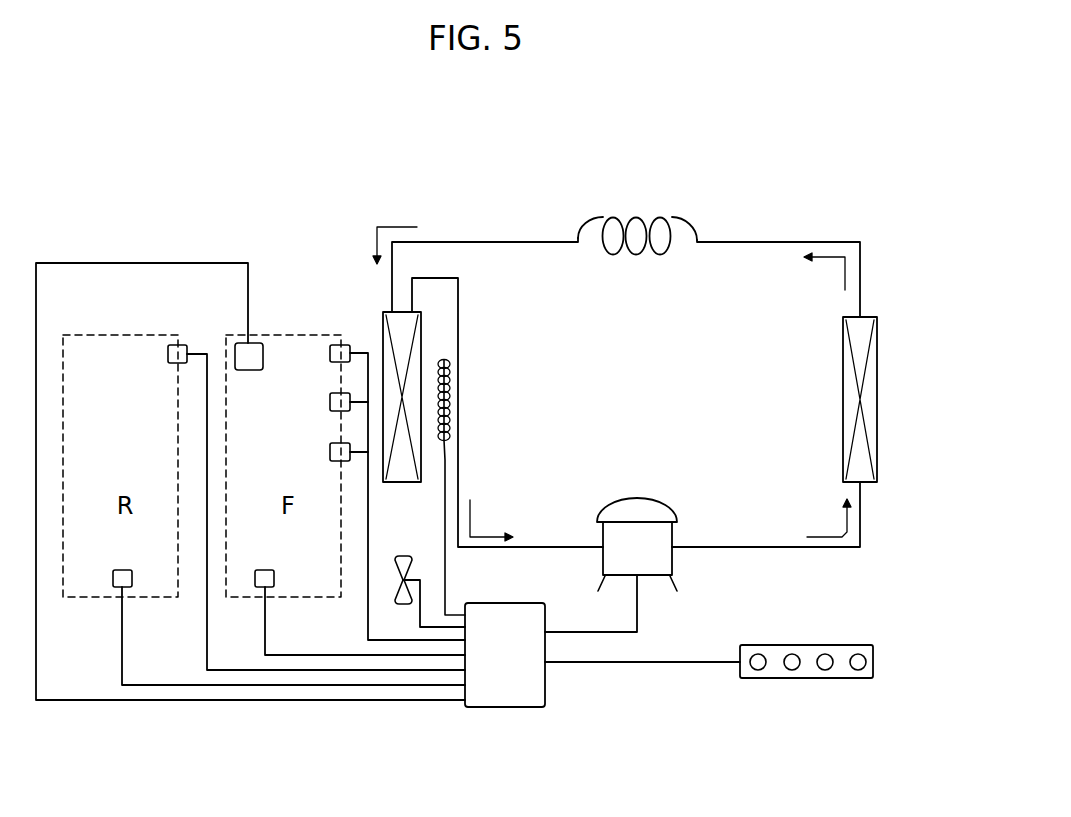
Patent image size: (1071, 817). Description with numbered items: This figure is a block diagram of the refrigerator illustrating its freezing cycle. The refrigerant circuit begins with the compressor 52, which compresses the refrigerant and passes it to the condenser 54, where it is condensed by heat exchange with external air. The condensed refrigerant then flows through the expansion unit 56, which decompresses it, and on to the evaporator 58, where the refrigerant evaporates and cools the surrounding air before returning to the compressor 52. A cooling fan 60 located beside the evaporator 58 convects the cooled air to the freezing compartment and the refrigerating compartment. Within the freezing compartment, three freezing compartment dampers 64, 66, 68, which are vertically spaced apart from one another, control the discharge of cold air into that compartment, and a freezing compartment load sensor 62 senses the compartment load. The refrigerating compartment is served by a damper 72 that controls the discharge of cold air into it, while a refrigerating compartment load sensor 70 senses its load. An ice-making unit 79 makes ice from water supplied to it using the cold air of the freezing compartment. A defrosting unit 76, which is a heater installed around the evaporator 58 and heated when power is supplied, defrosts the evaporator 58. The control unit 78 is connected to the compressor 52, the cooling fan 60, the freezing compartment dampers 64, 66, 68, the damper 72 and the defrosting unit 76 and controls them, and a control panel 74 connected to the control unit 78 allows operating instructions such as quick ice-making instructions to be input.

The compressor 52 is at (662, 504).
The condenser 54 is at (872, 370).
The expansion unit 56 is at (622, 216).
The evaporator 58 is at (383, 325).
The cooling fan 60 is at (404, 557).
The freezing compartment load sensor 62 is at (274, 576).
The freezing compartment damper 64 is at (330, 352).
The freezing compartment damper 66 is at (330, 403).
The freezing compartment damper 68 is at (330, 453).
The refrigerating compartment load sensor 70 is at (132, 576).
The damper 72 is at (168, 353).
The control panel 74 is at (862, 668).
The defrosting unit 76 is at (444, 360).
The control unit 78 is at (507, 698).
The ice-making unit 79 is at (235, 357).